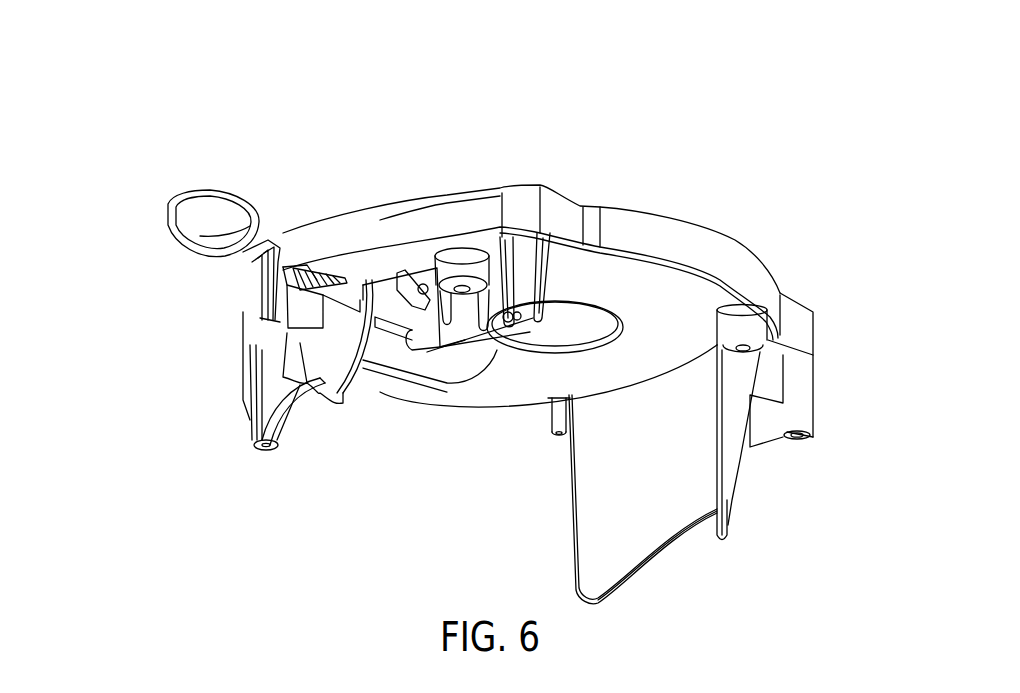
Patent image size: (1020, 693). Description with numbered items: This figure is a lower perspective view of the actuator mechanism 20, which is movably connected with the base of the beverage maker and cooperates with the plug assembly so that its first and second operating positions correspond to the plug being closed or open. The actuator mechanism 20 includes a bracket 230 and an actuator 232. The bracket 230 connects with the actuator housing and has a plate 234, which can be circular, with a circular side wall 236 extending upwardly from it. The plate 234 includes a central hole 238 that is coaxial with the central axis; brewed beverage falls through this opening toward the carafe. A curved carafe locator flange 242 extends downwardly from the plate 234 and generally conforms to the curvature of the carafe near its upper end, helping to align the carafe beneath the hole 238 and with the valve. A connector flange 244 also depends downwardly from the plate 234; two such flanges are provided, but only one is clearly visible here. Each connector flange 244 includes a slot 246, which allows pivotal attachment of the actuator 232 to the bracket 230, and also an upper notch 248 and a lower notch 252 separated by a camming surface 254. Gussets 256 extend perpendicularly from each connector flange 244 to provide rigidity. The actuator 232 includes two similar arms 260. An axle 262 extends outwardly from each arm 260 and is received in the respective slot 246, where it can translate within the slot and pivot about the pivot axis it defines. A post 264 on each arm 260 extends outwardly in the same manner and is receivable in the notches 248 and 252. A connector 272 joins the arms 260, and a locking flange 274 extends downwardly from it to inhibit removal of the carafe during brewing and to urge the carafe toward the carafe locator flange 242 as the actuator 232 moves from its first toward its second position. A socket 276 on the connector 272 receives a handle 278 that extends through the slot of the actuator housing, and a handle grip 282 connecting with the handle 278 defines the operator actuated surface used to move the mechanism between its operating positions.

The actuator mechanism 20 is at (733, 192).
The bracket 230 is at (721, 304).
The actuator 232 is at (277, 362).
The plate 234 is at (506, 362).
The circular side wall 236 is at (742, 258).
The central hole 238 is at (613, 317).
The carafe locator flange 242 is at (727, 512).
The connector flange 244 is at (463, 322).
The slot 246 is at (508, 313).
The upper notch 248 is at (412, 280).
The lower notch 252 is at (423, 345).
The camming surface 254 is at (393, 283).
The gusset 256 is at (500, 392).
The arm 260 is at (553, 327).
The axle 262 is at (522, 318).
The post 264 is at (418, 283).
The connector 272 is at (342, 303).
The locking flange 274 is at (307, 393).
The socket 276 is at (293, 335).
The handle 278 is at (257, 277).
The handle grip 282 is at (170, 222).